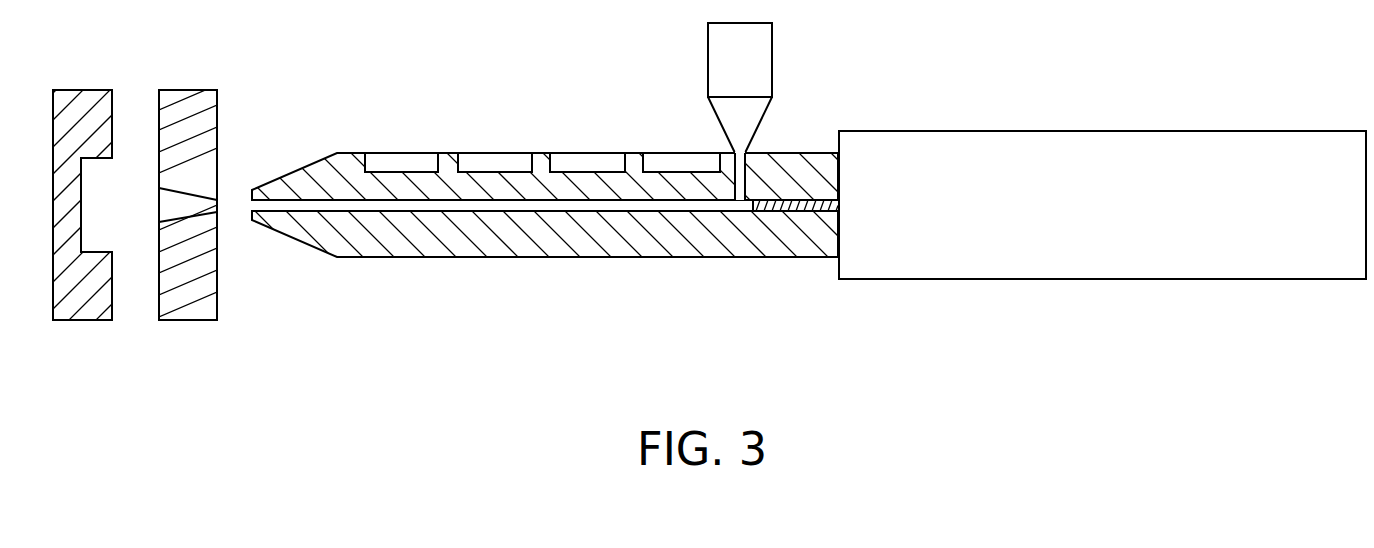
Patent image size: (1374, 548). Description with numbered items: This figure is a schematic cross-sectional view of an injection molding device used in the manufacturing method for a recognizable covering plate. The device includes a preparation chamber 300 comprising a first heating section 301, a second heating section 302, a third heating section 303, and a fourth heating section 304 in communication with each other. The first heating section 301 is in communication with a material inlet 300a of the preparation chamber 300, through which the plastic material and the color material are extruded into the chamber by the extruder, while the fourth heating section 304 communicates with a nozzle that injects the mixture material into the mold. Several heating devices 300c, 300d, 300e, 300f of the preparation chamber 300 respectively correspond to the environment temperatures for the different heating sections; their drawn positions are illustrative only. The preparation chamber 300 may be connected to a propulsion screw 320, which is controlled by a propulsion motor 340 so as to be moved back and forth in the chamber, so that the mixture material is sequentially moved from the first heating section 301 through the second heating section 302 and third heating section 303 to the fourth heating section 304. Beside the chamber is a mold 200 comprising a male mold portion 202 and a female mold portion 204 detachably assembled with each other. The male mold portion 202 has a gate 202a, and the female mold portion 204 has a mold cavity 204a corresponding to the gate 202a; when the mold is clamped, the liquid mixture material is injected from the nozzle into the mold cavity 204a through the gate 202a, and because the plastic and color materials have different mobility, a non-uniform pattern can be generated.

The mold 200 is at (168, 216).
The male mold portion 202 is at (187, 206).
The gate 202a is at (178, 203).
The female mold portion 204 is at (168, 206).
The mold cavity 204a is at (90, 173).
The preparation chamber 300 is at (566, 178).
The material inlet 300a is at (743, 177).
The heating device 300c is at (665, 160).
The heating device 300d is at (587, 160).
The heating device 300e is at (492, 160).
The heating device 300f is at (400, 160).
The first heating section 301 is at (682, 205).
The second heating section 302 is at (588, 205).
The third heating section 303 is at (496, 205).
The fourth heating section 304 is at (402, 205).
The propulsion screw 320 is at (790, 205).
The propulsion motor 340 is at (883, 267).